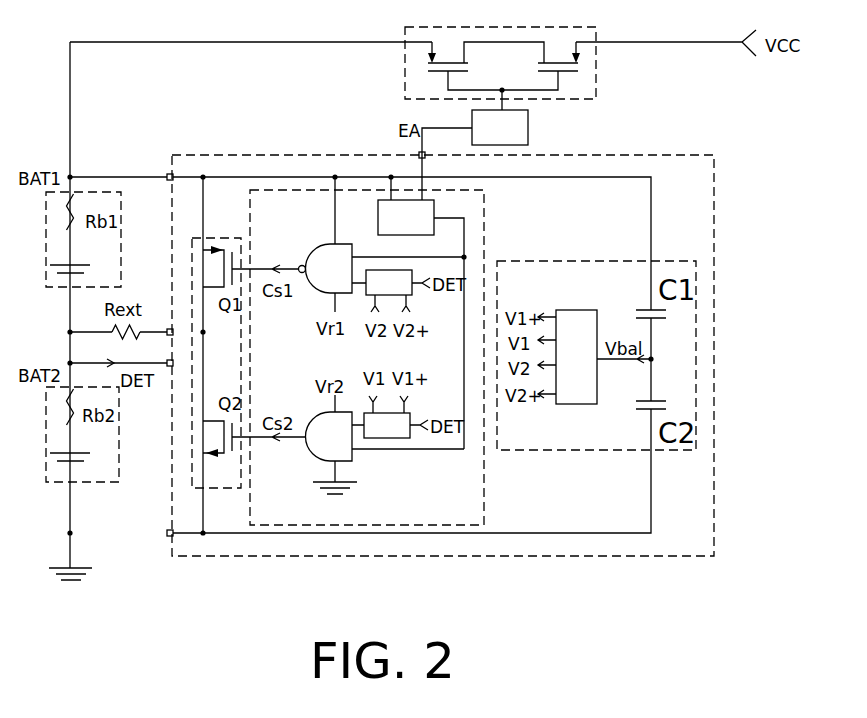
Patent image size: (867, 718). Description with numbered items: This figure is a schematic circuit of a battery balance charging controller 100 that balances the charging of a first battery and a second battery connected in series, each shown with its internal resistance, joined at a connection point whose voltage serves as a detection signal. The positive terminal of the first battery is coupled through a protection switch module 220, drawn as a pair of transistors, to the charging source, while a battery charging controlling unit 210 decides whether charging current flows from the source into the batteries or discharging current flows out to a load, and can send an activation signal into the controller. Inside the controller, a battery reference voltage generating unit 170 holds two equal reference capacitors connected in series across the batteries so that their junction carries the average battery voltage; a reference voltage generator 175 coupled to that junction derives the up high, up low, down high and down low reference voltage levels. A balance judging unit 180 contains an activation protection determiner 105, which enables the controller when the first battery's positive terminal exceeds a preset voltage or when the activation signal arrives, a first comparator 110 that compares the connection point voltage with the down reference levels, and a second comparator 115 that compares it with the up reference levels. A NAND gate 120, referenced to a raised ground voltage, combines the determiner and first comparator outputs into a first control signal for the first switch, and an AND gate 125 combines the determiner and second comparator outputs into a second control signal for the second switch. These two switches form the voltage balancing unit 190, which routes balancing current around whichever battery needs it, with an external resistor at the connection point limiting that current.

The battery balance charging controller 100 is at (710, 182).
The activation protection determiner 105 is at (420, 231).
The first comparator 110 is at (403, 293).
The second comparator 115 is at (401, 435).
The NAND gate 120 is at (323, 255).
The AND gate 125 is at (315, 452).
The battery reference voltage generating unit 170 is at (565, 262).
The reference voltage generator 175 is at (590, 370).
The balance judging unit 180 is at (259, 218).
The voltage balancing unit 190 is at (210, 490).
The battery charging controlling unit 210 is at (514, 141).
The protection switch module 220 is at (590, 30).